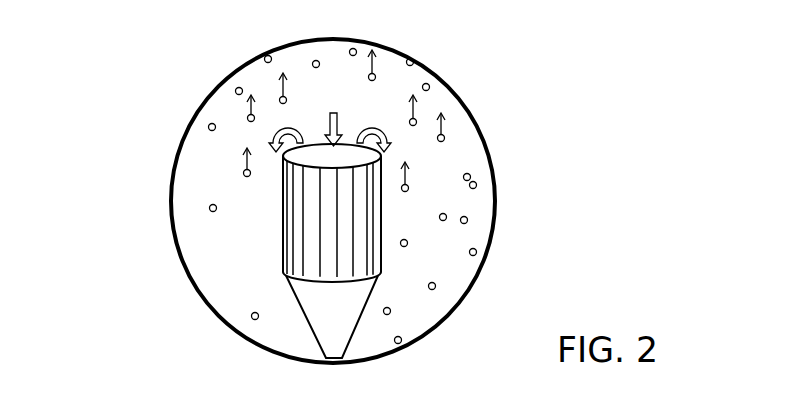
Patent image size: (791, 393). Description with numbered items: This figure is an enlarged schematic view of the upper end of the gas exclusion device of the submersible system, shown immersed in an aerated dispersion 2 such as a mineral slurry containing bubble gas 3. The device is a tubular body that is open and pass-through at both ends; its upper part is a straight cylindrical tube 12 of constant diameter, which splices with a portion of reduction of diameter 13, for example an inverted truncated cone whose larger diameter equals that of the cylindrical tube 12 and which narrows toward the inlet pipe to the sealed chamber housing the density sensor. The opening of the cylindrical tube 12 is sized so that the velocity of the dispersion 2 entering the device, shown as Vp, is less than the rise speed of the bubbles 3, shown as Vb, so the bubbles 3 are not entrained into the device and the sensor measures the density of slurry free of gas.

The dispersion 2 is at (273, 138).
The bubble gas 3 is at (477, 185).
The straight cylindrical tube 12 is at (333, 313).
The portion of reduction of diameter 13 is at (312, 222).